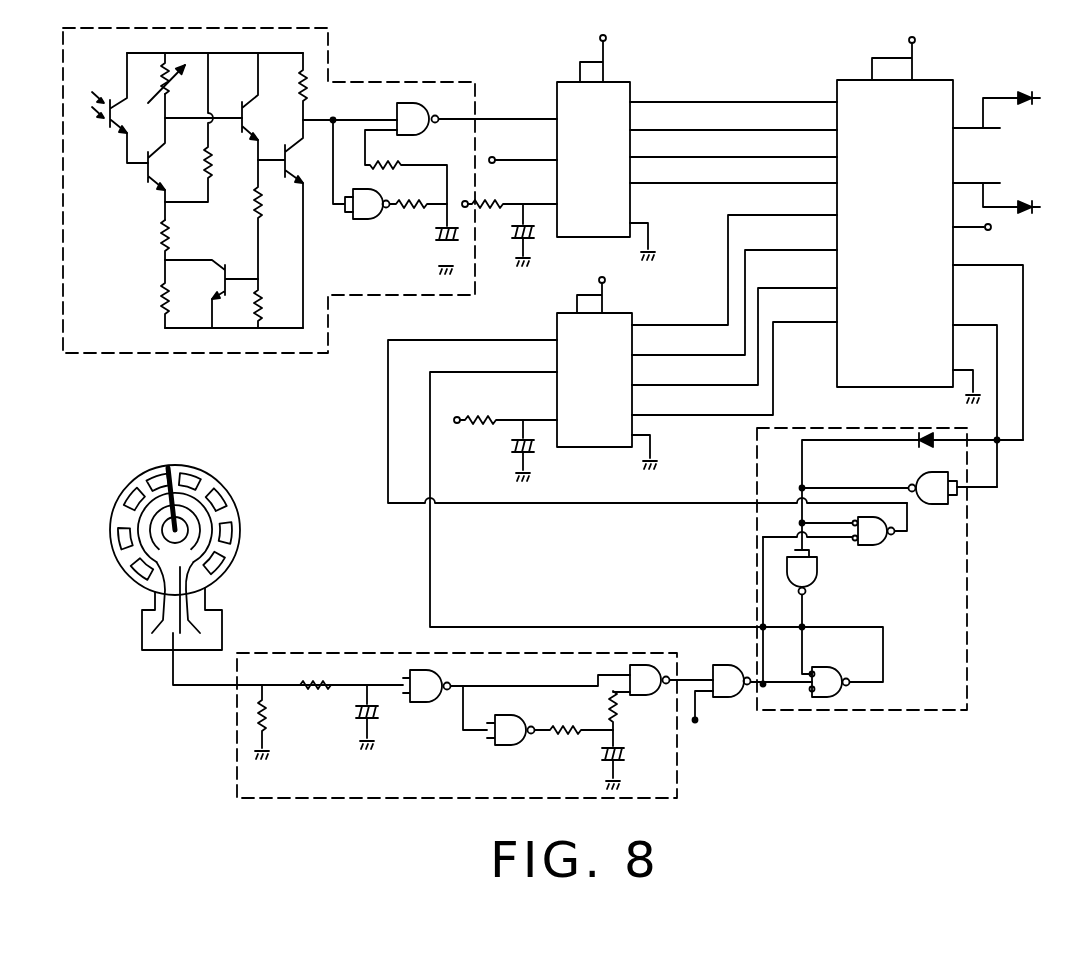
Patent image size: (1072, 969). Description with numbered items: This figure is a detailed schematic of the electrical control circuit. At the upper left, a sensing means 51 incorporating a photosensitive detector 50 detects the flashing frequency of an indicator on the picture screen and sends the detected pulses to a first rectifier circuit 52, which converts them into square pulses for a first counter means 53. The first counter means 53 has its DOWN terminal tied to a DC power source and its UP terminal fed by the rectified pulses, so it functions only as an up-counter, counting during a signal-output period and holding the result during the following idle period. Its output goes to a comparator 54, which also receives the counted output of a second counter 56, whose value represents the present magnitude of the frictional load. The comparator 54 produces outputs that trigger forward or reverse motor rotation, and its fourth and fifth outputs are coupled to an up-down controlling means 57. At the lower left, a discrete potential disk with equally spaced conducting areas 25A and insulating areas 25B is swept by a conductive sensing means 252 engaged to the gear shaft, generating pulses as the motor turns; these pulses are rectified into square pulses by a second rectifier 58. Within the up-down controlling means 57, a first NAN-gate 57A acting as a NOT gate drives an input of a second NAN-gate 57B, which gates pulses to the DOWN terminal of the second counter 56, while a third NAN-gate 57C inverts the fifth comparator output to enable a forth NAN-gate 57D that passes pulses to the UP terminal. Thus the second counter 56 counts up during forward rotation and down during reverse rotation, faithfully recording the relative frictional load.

The conducting areas 25A is at (223, 496).
The insulating areas 25B is at (118, 518).
The conductive sensing means 252 is at (173, 470).
The photodetector 50 is at (102, 134).
The sensing means 51 is at (269, 212).
The first rectifier circuit 52 is at (396, 292).
The first counter means 53 is at (622, 82).
The comparator 54 is at (939, 253).
The second counter 56 is at (600, 447).
The up-down controlling means 57 is at (890, 584).
The first NAN-gate 57A is at (818, 586).
The second NAN-gate 57B is at (847, 698).
The third NAN-gate 57C is at (934, 501).
The forth NAN-gate 57D is at (874, 546).
The second rectifier 58 is at (237, 790).